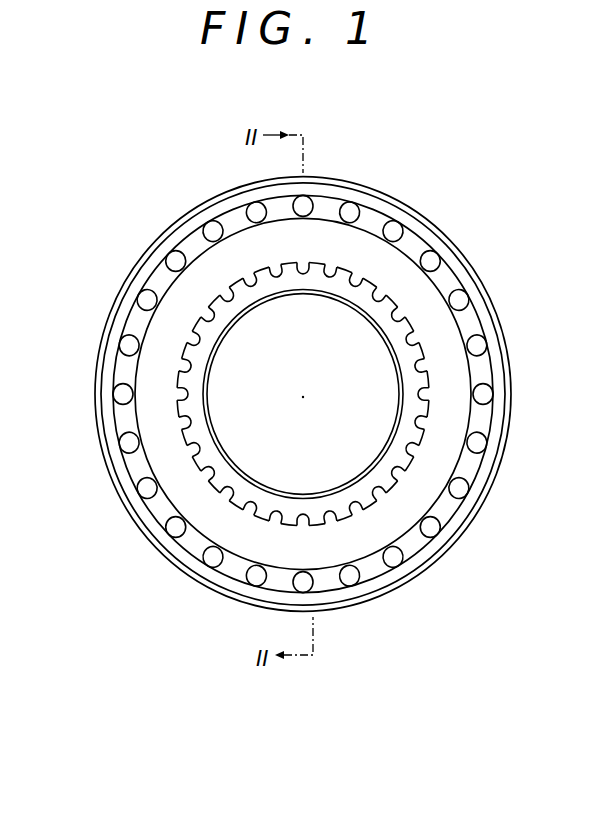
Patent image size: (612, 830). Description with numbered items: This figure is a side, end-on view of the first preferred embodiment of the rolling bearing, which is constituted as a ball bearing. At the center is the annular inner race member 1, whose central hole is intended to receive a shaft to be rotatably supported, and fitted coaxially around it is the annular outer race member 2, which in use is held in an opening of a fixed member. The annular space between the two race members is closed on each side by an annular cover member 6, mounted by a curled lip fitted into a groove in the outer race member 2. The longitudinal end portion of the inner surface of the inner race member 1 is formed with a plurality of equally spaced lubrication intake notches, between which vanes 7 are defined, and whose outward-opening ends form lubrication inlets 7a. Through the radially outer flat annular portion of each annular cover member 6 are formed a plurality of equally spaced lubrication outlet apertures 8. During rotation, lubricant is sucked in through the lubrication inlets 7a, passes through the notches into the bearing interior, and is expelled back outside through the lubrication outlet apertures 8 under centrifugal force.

The inner race member 1 is at (250, 293).
The outer race member 2 is at (205, 217).
The annular cover member 6 is at (403, 270).
The vane 7 is at (350, 500).
The lubrication inlet 7a is at (415, 330).
The lubrication outlet aperture 8 is at (122, 343).